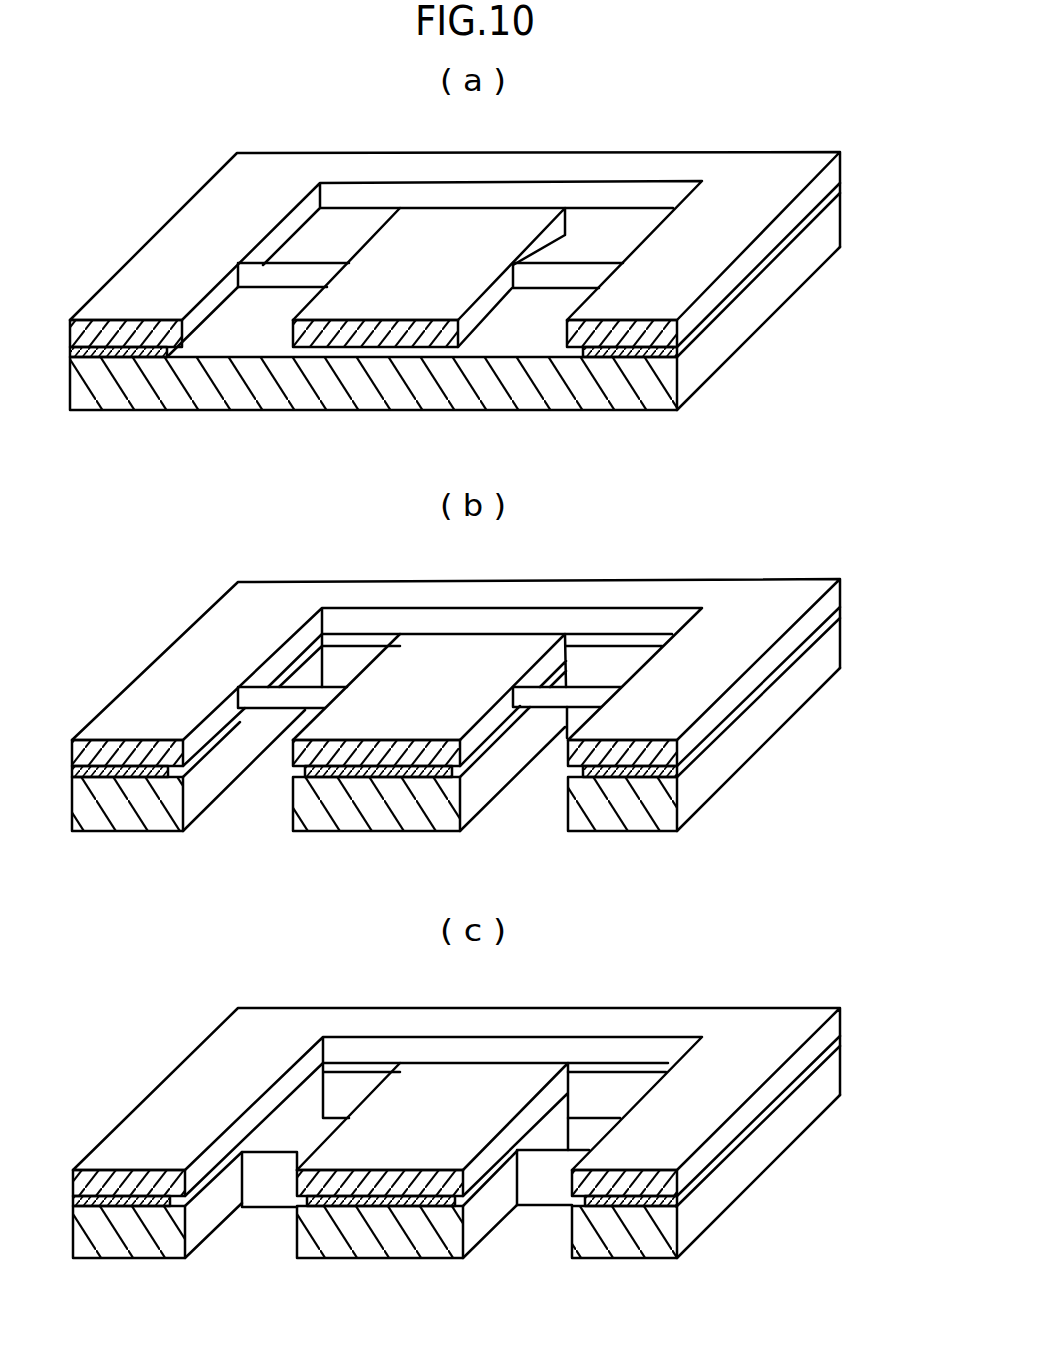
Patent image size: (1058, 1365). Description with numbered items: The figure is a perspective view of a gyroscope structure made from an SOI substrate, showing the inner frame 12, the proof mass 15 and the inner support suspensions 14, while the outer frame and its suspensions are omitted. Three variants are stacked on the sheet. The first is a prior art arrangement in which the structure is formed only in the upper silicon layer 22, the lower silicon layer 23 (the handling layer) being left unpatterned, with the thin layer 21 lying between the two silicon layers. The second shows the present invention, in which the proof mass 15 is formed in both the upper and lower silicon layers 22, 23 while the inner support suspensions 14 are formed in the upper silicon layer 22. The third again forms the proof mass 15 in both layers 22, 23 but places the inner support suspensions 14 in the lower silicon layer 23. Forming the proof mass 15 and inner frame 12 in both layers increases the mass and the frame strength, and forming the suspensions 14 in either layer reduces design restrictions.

The inner frame 12 is at (606, 153).
The inner support suspensions 14 is at (547, 275).
The proof mass 15 is at (462, 228).
The insulating layer 21 is at (807, 218).
The upper silicon layer 22 is at (830, 175).
The lower silicon layer 23 is at (657, 383).